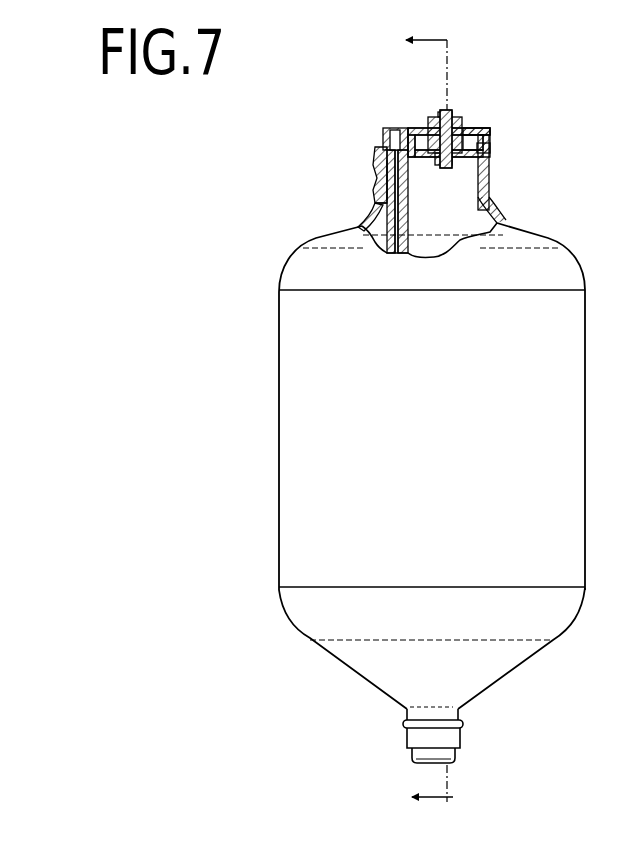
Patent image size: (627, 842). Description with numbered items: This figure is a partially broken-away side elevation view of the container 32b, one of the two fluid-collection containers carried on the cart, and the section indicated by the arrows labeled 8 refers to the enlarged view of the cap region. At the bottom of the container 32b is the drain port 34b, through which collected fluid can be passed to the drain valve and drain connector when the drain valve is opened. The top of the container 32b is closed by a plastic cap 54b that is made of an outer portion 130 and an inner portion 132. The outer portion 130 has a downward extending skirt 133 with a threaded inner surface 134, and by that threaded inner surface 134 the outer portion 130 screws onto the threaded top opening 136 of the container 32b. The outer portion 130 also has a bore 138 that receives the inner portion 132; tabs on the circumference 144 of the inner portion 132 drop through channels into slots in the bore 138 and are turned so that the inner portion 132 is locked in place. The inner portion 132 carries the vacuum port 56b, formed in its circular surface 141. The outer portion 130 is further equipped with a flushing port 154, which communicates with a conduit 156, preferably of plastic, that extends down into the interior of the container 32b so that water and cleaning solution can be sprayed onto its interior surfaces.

The container 32b is at (275, 152).
The drain port 34b is at (425, 765).
The plastic cap 54b is at (363, 87).
The vacuum port 56b is at (453, 118).
The circumference 144 is at (430, 138).
The circular surface 141 is at (468, 130).
The inner portion 132 is at (492, 128).
The bore 138 is at (488, 145).
The outer portion 130 is at (490, 150).
The threaded inner surface 134 is at (488, 184).
The flushing port 154 is at (381, 134).
The skirt 133 is at (375, 163).
The threaded top opening 136 is at (380, 182).
The conduit 156 is at (378, 205).
The section line 8- 8 is at (436, 413).